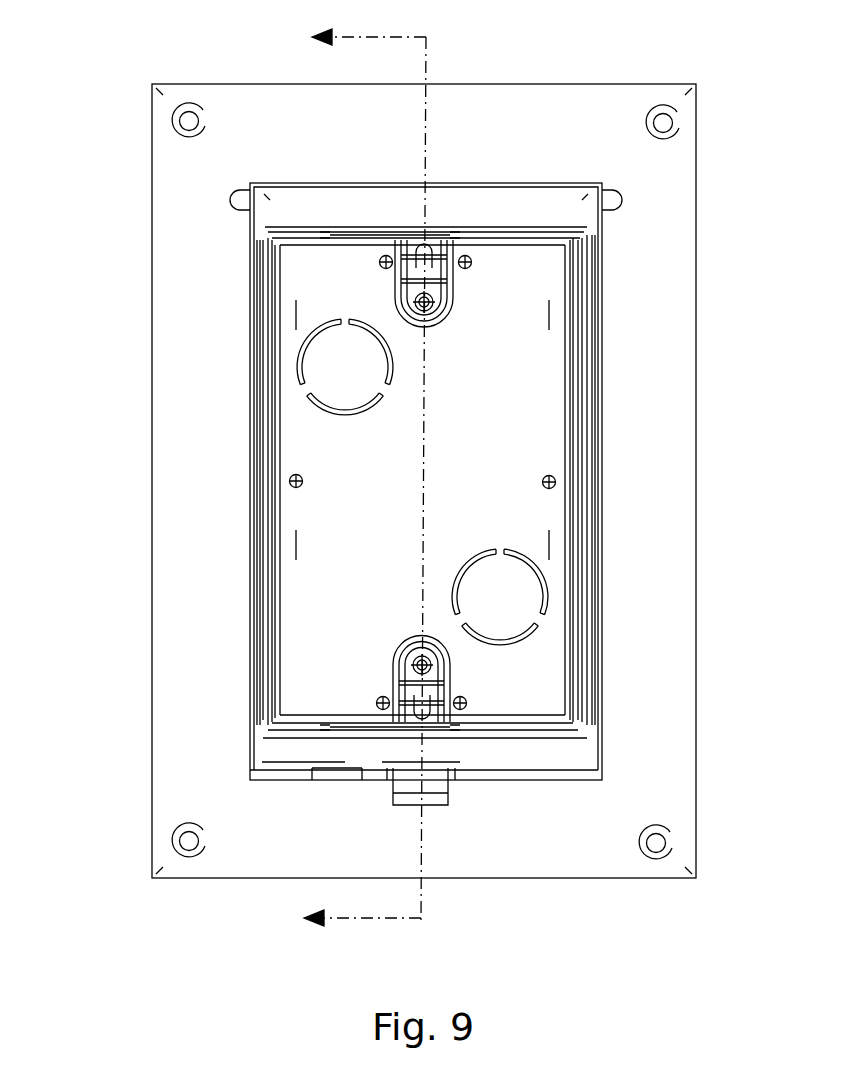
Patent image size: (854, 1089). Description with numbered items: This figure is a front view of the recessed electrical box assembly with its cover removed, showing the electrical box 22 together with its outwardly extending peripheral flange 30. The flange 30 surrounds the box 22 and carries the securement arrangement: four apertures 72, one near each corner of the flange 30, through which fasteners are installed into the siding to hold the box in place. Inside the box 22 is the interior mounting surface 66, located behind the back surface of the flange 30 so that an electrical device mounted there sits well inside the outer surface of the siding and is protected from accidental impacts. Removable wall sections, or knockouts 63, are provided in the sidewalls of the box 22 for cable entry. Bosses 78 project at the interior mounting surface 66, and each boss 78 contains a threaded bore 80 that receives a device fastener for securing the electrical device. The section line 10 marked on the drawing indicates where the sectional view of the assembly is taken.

The electrical box 22 is at (98, 97).
The peripheral flange 30 is at (658, 456).
The apertures 72 is at (668, 116).
The interior mounting surface 66 is at (488, 218).
The knockouts 63 is at (422, 482).
The bosses 78 is at (450, 296).
The threaded bores 80 is at (441, 318).
The section line 10 is at (365, 477).